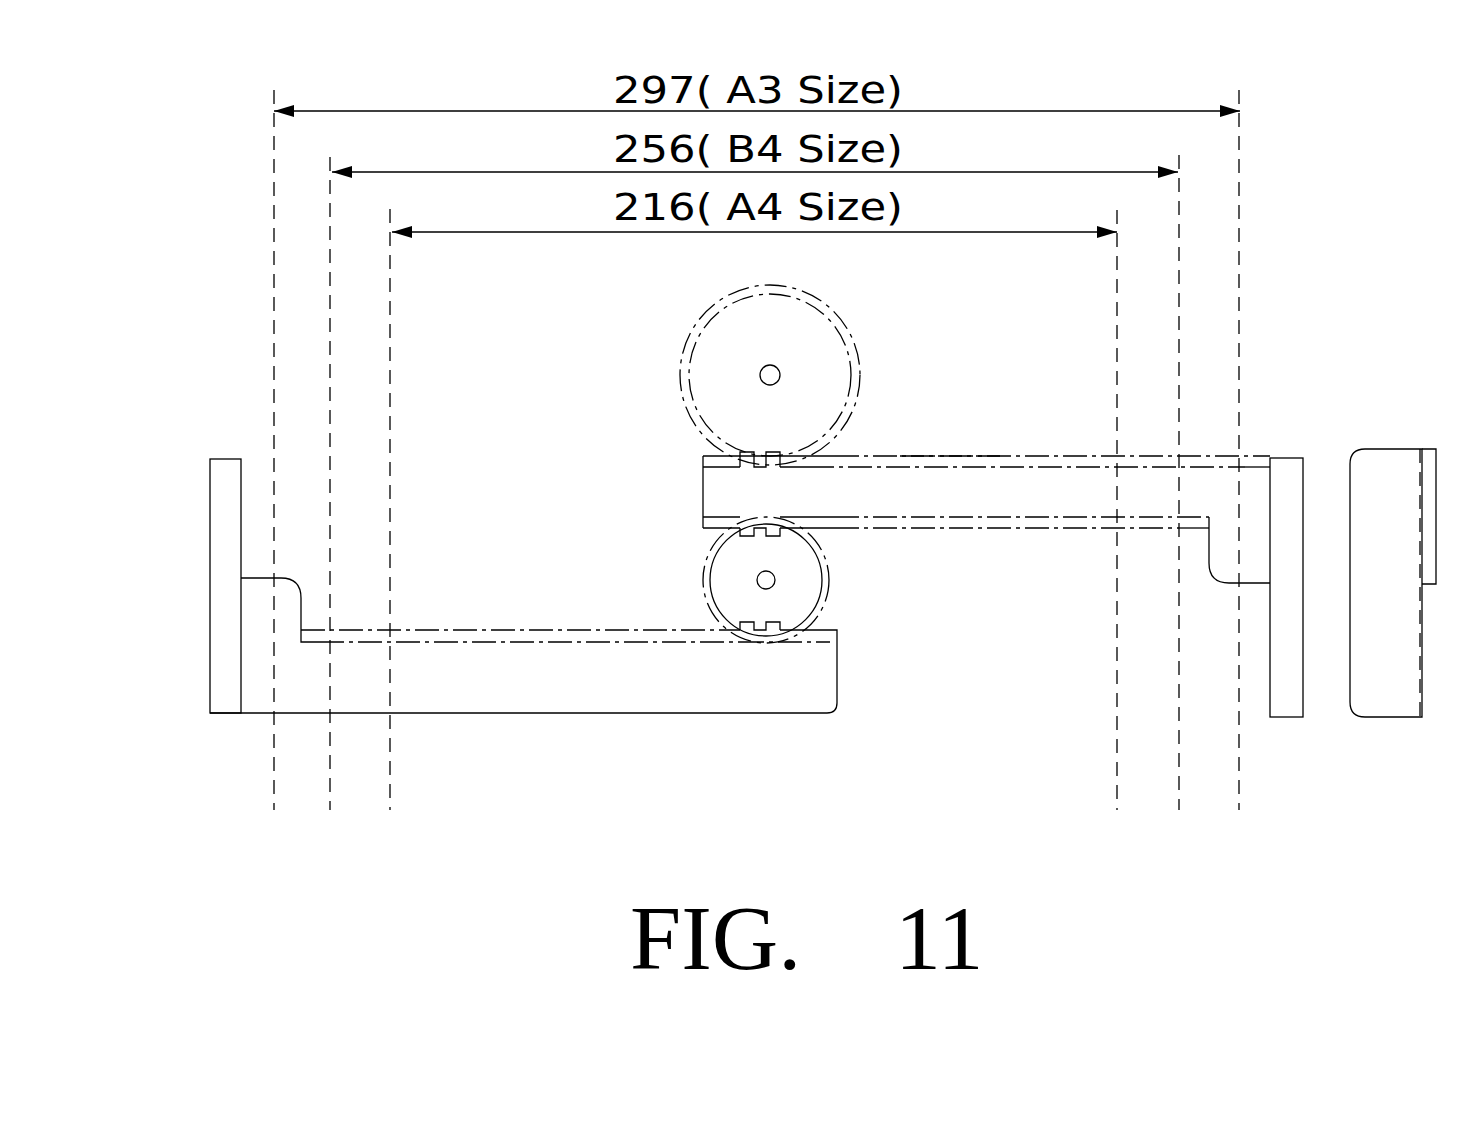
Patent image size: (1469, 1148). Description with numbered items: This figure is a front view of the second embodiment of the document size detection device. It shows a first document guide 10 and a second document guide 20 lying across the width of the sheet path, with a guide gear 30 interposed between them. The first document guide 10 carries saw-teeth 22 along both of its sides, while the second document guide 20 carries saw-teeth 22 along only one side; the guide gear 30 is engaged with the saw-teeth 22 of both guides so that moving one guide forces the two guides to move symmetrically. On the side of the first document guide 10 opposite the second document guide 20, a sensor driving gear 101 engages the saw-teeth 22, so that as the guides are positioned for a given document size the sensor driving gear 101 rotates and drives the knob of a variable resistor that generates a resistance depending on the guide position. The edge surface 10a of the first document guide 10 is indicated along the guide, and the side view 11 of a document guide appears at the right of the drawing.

The first document guide 10 is at (1015, 477).
The upper surface of guide plate 10a is at (935, 455).
The side view of document guide 11 is at (1397, 453).
The second document guide 20 is at (718, 705).
The saw-teeth 22 is at (793, 670).
The guide gear 30 is at (708, 592).
The sensor driving gear 101 is at (818, 328).